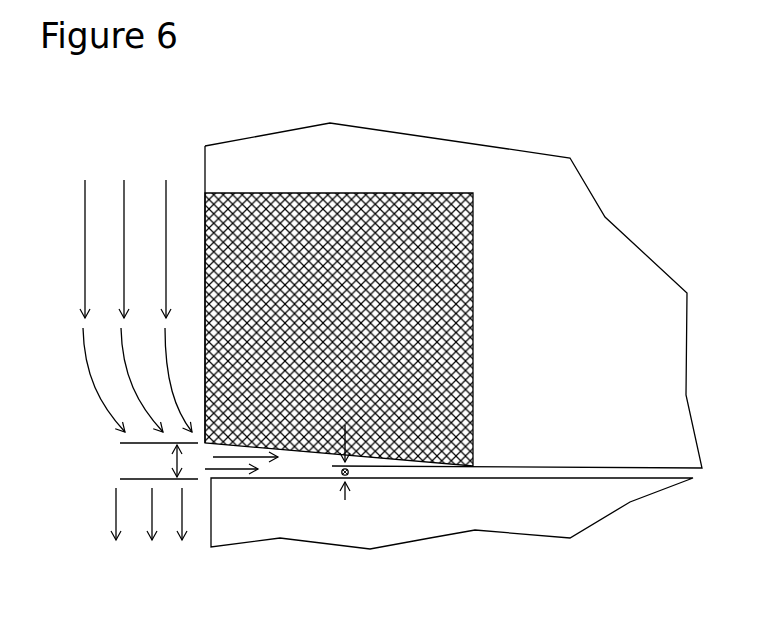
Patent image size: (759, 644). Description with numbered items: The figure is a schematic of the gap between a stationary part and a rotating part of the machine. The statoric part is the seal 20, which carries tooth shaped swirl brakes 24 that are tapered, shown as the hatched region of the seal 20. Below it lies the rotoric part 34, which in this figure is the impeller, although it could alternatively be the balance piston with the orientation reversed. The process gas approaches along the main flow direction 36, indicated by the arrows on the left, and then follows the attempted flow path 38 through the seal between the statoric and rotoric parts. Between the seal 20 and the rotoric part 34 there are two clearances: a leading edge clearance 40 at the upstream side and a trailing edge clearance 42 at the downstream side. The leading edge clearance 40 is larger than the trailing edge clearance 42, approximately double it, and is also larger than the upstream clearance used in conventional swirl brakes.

The seal 20 is at (488, 168).
The tooth shaped swirl brakes 24 is at (263, 205).
The rotoric part 34 is at (508, 518).
The main flow direction 36 is at (110, 230).
The attempted flow path 38 is at (231, 468).
The leading edge clearance 40 is at (176, 461).
The trailing edge clearance 42 is at (353, 480).